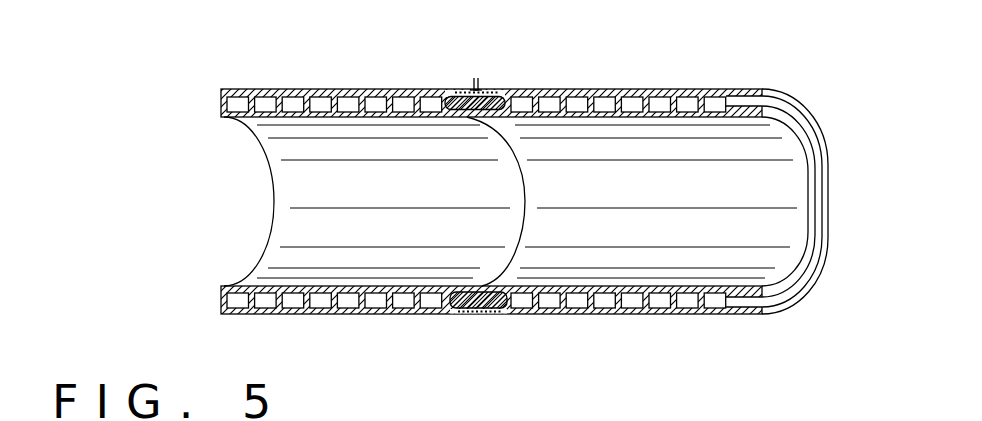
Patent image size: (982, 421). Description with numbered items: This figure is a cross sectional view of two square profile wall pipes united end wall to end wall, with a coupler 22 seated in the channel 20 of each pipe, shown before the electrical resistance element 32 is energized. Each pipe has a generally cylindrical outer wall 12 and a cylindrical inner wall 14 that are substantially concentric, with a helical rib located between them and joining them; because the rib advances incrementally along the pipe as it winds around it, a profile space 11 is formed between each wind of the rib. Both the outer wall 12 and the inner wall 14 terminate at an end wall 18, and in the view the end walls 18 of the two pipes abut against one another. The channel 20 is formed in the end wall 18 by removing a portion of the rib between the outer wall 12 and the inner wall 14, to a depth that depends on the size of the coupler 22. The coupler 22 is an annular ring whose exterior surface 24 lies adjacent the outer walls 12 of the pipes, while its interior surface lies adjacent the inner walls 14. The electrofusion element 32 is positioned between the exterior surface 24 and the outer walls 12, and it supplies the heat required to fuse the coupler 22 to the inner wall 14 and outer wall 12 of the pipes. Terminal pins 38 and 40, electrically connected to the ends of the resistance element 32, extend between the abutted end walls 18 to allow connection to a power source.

The profile space 11 is at (632, 91).
The outer wall 12 is at (283, 314).
The inner wall 14 is at (447, 118).
The end wall 18 is at (503, 256).
The channel 20 is at (783, 107).
The coupler 22 is at (478, 314).
The exterior surface 24 is at (512, 93).
The electrical resistance element 32 is at (498, 92).
The terminal pin 38 is at (472, 83).
The terminal pin 40 is at (480, 78).